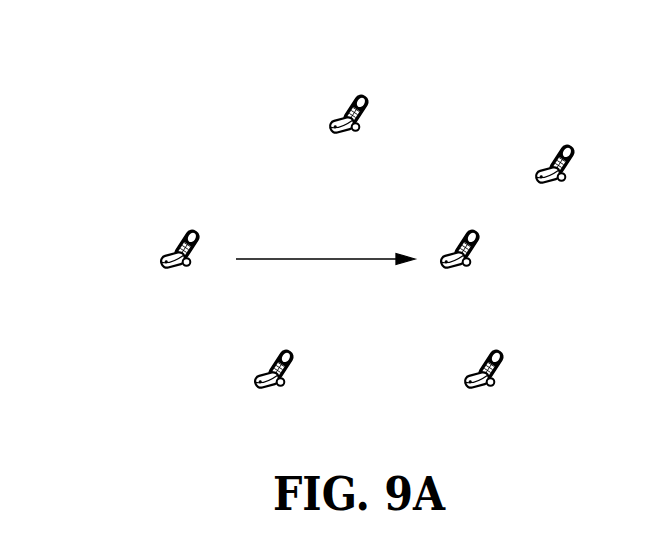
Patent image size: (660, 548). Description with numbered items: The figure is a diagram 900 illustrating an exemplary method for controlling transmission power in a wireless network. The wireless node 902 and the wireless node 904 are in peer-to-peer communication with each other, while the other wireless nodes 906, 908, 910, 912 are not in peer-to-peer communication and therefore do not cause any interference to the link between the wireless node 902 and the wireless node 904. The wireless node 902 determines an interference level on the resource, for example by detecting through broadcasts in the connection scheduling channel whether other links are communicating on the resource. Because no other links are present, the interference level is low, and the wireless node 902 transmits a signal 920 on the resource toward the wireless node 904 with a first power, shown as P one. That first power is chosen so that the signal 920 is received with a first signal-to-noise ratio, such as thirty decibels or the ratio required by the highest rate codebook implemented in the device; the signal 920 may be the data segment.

The diagram 900 is at (163, 78).
The wireless node 902 is at (196, 262).
The wireless node 904 is at (476, 262).
The wireless node 906 is at (365, 127).
The wireless node 908 is at (572, 177).
The wireless node 910 is at (290, 382).
The wireless node 912 is at (500, 382).
The signal 920 is at (325, 258).